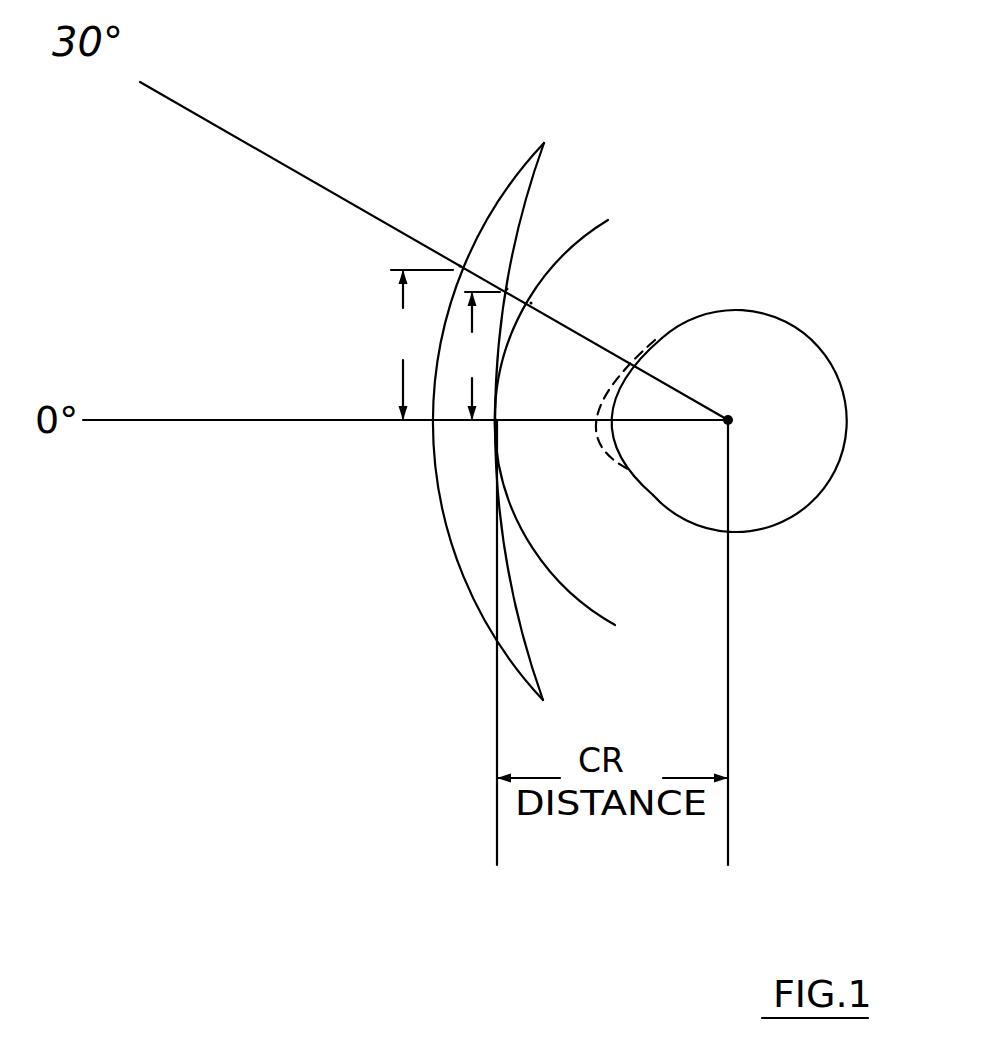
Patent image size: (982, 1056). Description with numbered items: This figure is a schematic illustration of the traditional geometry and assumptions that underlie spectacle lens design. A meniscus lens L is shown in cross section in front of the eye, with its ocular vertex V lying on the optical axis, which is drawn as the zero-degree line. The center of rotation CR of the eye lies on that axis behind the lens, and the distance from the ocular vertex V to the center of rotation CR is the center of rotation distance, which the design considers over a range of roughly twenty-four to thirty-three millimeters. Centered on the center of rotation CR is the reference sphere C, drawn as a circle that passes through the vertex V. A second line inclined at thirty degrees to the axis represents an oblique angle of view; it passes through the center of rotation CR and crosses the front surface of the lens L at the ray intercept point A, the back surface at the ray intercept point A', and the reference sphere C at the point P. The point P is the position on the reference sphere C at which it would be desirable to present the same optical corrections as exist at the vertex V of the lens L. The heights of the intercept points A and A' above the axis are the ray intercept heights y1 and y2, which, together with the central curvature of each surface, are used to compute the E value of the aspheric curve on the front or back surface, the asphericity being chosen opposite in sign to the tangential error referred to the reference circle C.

The lens L is at (448, 487).
The reference sphere C is at (568, 417).
The center of rotation CR is at (748, 400).
The vertex V is at (500, 425).
The ray intercept point A is at (450, 240).
The ray intercept point A' is at (531, 258).
The point on reference sphere P is at (533, 303).
The ray intercept height y1 is at (421, 345).
The ray intercept height y2 is at (479, 356).